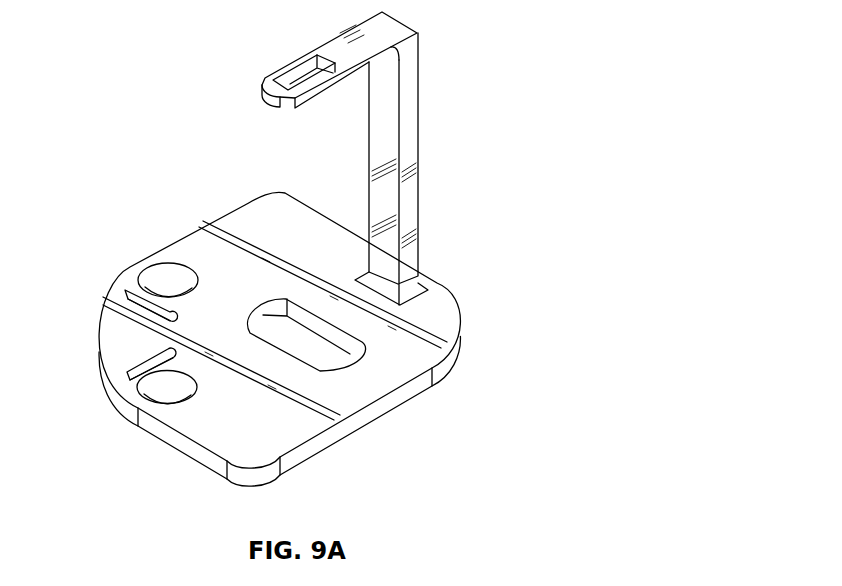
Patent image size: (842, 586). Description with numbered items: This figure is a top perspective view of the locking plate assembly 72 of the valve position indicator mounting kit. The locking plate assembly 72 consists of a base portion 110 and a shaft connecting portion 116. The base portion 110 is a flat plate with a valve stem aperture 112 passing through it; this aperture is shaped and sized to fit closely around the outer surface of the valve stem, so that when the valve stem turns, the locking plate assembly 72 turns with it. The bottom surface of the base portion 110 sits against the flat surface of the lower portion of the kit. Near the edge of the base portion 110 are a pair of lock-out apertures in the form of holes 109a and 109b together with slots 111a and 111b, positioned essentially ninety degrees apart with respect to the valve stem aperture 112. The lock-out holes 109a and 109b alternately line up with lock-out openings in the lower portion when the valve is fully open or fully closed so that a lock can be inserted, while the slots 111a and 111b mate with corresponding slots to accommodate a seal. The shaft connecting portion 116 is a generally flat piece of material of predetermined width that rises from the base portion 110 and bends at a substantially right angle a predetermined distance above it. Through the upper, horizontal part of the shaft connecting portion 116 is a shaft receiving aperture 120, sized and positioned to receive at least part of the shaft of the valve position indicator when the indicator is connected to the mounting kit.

The locking plate assembly 72 is at (110, 335).
The base portion 110 is at (369, 428).
The valve stem aperture 112 is at (293, 306).
The shaft connecting portion 116 is at (422, 117).
The shaft receiving aperture 120 is at (299, 63).
The lock-out hole 109a is at (176, 404).
The lock-out hole 109b is at (180, 268).
The slot 111a is at (127, 373).
The slot 111b is at (128, 292).